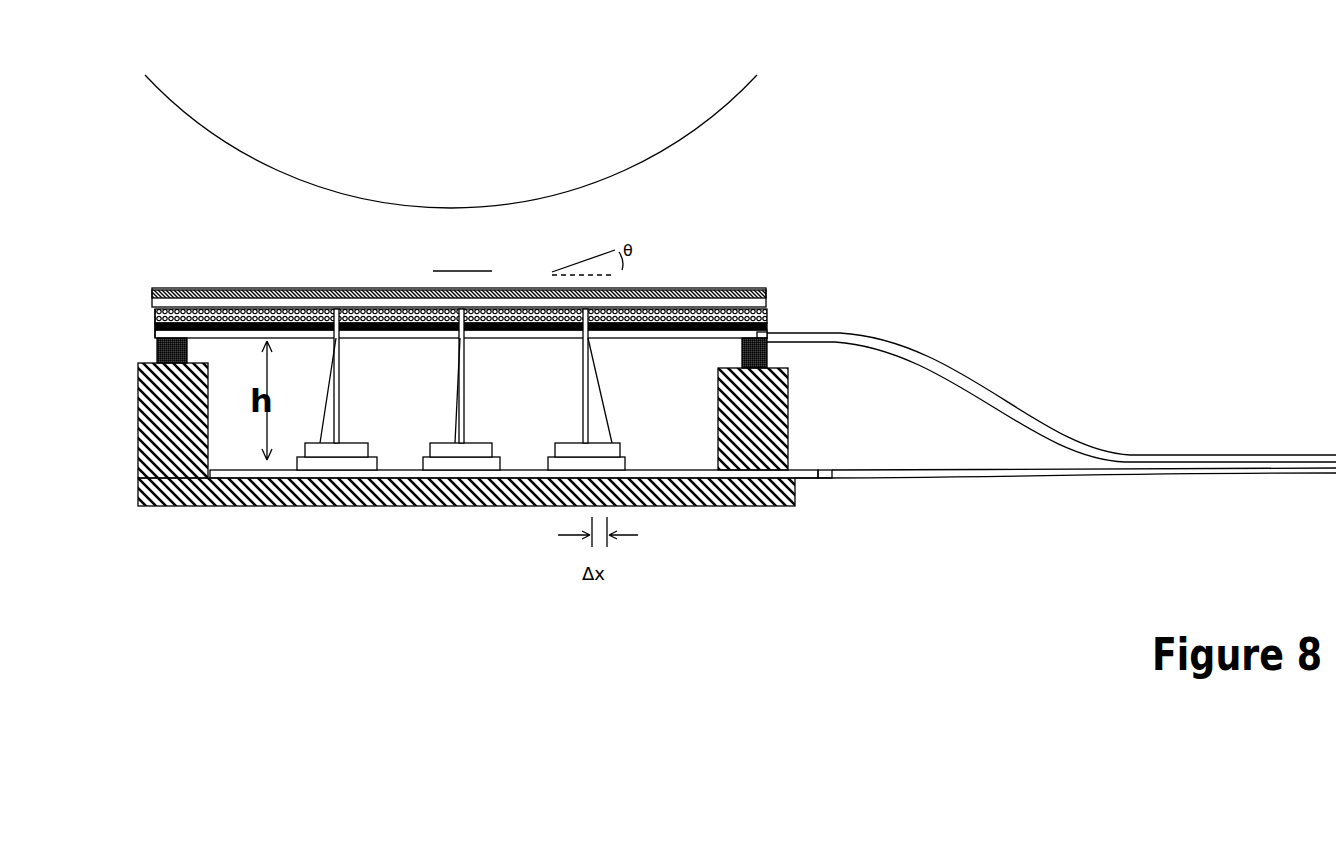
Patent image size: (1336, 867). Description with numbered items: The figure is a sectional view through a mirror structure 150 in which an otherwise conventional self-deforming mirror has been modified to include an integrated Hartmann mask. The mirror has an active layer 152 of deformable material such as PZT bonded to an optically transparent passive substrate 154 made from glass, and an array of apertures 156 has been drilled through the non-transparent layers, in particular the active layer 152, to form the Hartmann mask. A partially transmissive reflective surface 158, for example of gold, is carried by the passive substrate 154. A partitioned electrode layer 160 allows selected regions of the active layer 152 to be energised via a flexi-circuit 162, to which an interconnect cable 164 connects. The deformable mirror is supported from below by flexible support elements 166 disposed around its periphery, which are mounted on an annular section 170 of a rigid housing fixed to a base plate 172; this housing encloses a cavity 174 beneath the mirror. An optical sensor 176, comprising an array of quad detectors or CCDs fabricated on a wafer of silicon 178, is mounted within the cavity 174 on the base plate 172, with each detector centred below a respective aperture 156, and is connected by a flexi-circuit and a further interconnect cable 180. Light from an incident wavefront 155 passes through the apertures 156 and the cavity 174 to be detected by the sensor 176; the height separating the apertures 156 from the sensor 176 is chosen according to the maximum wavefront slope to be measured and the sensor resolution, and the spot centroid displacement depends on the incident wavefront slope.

The mirror structure 150 is at (822, 230).
The active layer 152 is at (154, 315).
The passive substrate 154 is at (768, 313).
The incident wavefront 155 is at (720, 125).
The apertures 156 is at (337, 288).
The partially transmissive reflective surface 158 is at (670, 288).
The partitioned electrode layer 160 is at (768, 327).
The flexi-circuit 162 is at (155, 333).
The interconnect cable 164 is at (978, 370).
The flexible support elements 166 is at (770, 355).
The annular section 170 is at (790, 430).
The base plate 172 is at (350, 507).
The cavity 174 is at (418, 407).
The optical sensor 176 is at (563, 443).
The wafer of silicon 178 is at (668, 470).
The further interconnect cable 180 is at (1013, 482).